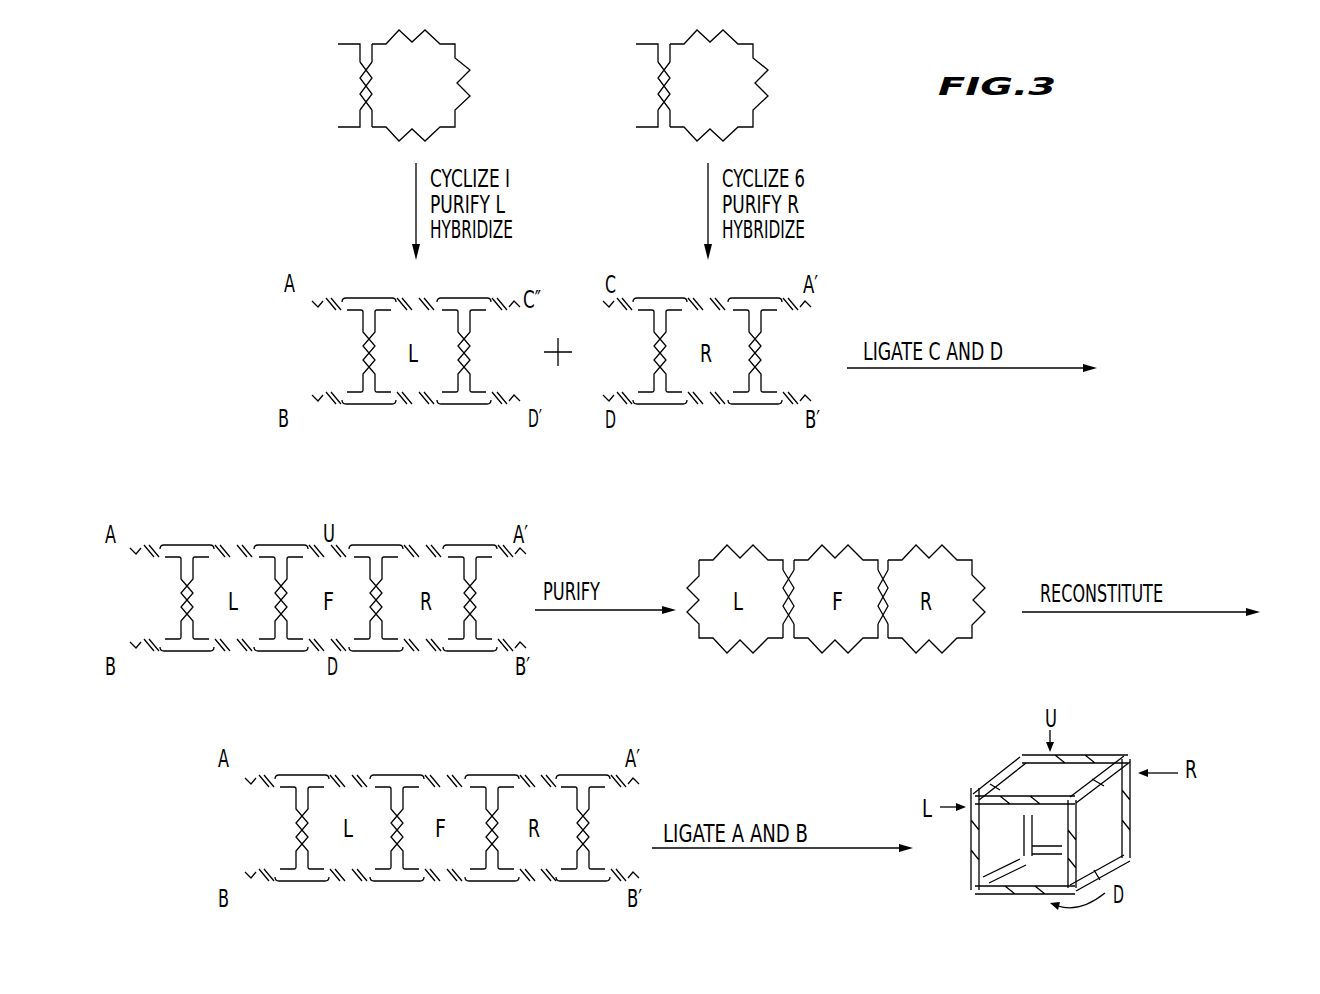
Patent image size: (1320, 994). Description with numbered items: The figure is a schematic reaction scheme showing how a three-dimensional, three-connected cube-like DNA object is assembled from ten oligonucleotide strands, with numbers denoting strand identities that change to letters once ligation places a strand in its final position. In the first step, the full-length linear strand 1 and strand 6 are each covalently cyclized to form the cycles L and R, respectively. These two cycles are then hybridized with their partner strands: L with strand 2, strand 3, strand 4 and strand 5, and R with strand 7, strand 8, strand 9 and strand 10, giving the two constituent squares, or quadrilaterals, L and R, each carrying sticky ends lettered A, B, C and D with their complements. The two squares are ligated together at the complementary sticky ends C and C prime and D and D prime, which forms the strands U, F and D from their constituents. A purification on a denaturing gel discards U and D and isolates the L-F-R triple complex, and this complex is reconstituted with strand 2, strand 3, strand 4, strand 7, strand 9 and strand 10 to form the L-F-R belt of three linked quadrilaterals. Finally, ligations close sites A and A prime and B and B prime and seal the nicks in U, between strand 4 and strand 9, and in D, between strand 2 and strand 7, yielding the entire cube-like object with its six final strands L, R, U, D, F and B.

The strand 1 is at (421, 85).
The strand 2 is at (382, 647).
The strand 3 is at (266, 451).
The strand 4 is at (382, 533).
The strand 5 is at (474, 351).
The strand 6 is at (719, 85).
The strand 7 is at (629, 647).
The strand 8 is at (651, 213).
The strand 9 is at (626, 533).
The strand 10 is at (625, 589).